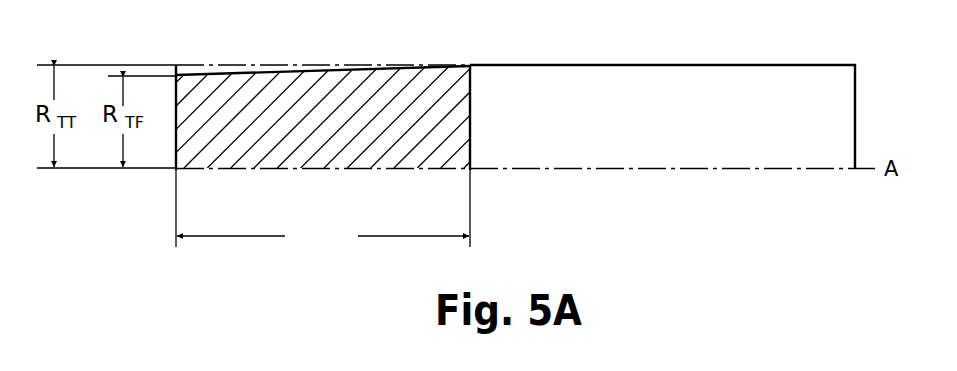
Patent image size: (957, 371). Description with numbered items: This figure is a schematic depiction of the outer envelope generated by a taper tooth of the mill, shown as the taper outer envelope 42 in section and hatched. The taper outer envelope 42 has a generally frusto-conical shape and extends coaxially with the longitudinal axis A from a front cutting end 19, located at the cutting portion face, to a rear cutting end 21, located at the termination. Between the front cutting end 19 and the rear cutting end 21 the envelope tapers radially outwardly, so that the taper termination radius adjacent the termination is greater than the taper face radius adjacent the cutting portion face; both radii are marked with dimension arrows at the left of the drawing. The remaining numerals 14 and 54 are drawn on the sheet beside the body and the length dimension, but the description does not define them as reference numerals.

The blade body / airfoil 14 is at (627, 85).
The taper outer envelope 42 is at (222, 72).
The front cutting end 19 is at (174, 172).
The rear cutting end 21 is at (472, 172).
The tip portion length L 54 is at (411, 250).